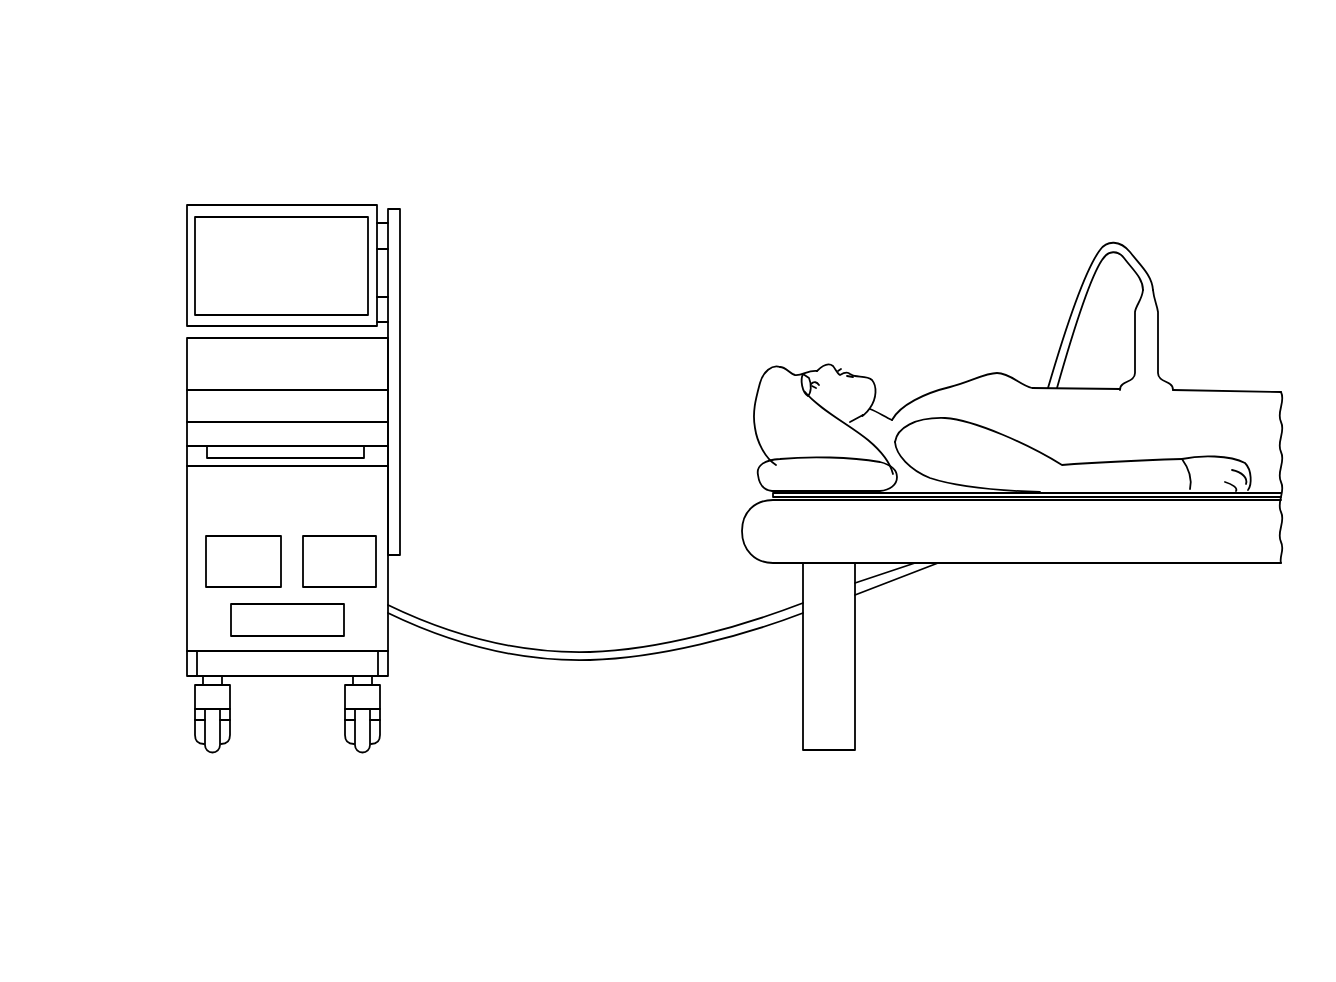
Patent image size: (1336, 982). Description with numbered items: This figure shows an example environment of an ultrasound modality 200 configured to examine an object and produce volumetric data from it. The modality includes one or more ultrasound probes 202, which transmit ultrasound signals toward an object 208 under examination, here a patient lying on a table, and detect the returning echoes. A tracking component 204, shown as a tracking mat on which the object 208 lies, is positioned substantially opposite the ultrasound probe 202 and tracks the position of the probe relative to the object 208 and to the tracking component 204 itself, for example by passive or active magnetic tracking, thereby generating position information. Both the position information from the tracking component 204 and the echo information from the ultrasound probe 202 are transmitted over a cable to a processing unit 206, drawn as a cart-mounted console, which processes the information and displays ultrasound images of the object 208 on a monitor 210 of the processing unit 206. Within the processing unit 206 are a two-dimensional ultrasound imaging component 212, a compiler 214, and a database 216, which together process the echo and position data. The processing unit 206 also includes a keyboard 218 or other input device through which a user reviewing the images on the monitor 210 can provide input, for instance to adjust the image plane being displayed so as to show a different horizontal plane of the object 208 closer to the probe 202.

The ultrasound imaging system 200 is at (1190, 80).
The ultrasound probe 202 is at (1158, 326).
The tracking component 204 is at (773, 493).
The processing unit 206 is at (160, 195).
The object 208 is at (770, 378).
The monitor 210 is at (187, 266).
The 2D ultrasound imaging component 212 is at (377, 562).
The compiler 214 is at (206, 561).
The database 216 is at (231, 621).
The keyboard 218 is at (207, 453).